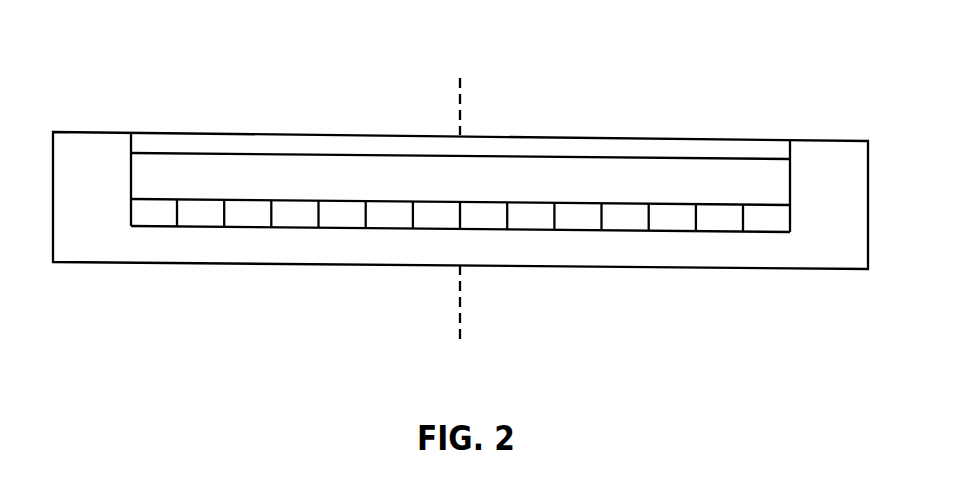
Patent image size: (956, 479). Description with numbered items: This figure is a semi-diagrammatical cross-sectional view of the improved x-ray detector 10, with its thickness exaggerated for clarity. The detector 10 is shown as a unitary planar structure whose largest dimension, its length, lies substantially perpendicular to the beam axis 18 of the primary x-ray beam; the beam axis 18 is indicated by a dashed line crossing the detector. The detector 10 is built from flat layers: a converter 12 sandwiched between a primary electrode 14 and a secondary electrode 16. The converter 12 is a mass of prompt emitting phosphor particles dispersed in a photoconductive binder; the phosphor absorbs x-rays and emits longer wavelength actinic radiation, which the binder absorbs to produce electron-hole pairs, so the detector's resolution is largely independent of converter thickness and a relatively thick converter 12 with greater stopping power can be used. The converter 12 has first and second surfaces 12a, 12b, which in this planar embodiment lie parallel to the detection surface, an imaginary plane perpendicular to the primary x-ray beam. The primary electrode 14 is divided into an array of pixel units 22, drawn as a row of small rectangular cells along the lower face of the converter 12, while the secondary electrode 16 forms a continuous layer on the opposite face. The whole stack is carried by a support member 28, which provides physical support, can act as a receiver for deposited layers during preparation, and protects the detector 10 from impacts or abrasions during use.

The x-ray detector 10 is at (570, 105).
The converter 12 is at (792, 185).
The first surface of the converter 12a is at (273, 154).
The second surface of the converter 12b is at (374, 203).
The primary electrode 14 is at (792, 212).
The secondary electrode 16 is at (792, 148).
The beam axis 18 is at (458, 97).
The pixel units 22 is at (252, 215).
The support members 28 is at (93, 265).